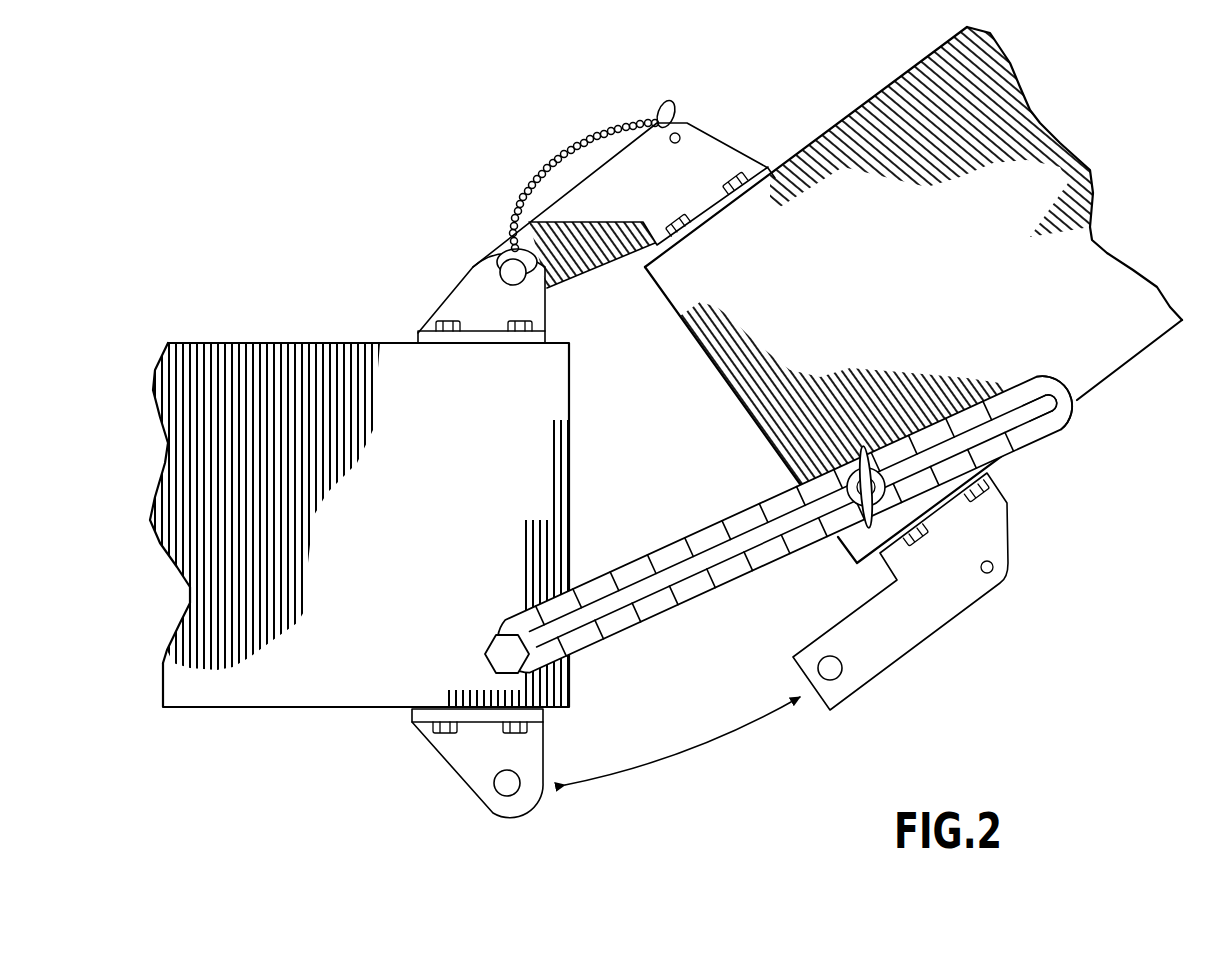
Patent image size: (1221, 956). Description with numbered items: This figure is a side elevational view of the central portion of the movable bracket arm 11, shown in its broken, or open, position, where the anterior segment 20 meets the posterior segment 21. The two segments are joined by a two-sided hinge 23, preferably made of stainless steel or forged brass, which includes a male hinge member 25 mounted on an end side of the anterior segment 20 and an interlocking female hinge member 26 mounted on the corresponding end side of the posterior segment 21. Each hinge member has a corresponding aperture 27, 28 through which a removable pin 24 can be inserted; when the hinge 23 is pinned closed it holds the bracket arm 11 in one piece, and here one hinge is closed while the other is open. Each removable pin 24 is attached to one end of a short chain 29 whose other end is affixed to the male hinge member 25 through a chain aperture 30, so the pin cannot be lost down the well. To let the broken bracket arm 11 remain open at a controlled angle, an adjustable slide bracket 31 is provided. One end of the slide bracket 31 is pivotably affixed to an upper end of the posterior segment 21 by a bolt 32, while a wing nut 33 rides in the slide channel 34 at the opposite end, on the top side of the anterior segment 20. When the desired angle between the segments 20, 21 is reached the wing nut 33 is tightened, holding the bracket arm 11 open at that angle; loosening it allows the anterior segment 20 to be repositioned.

The bracket arm 11 is at (223, 243).
The anterior segment 20 is at (902, 307).
The posterior segment 21 is at (413, 535).
The two-sided hinge 23 is at (720, 457).
The removable pin 24 is at (513, 270).
The male hinge member 25 is at (708, 160).
The female hinge member 26 is at (482, 300).
The aperture 27 is at (836, 676).
The aperture 28 is at (508, 786).
The short chain 29 is at (582, 125).
The chain aperture 30 is at (680, 136).
The adjustable slide bracket 31 is at (1062, 424).
The bolt 32 is at (498, 657).
The wing nut 33 is at (849, 490).
The slide channel 34 is at (648, 588).